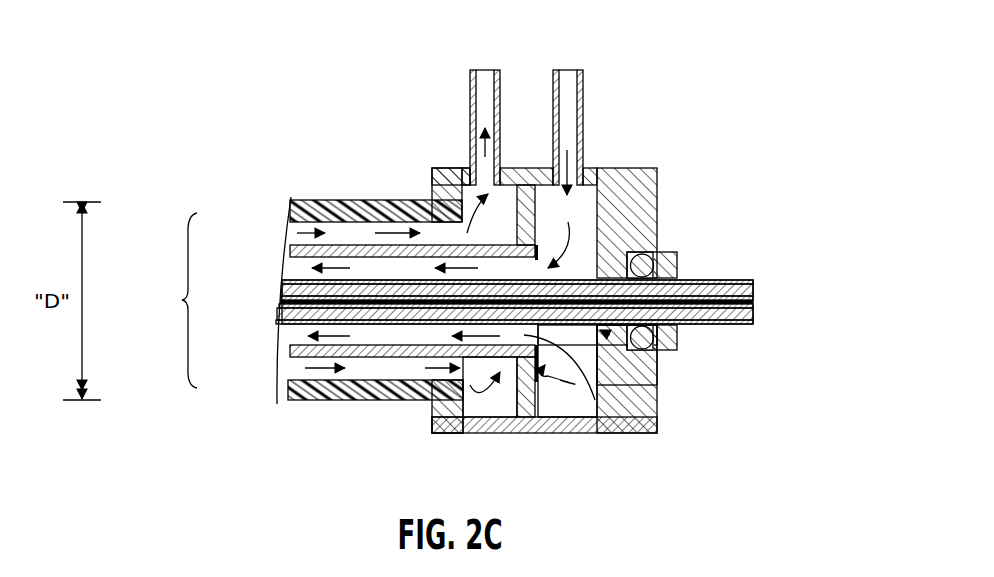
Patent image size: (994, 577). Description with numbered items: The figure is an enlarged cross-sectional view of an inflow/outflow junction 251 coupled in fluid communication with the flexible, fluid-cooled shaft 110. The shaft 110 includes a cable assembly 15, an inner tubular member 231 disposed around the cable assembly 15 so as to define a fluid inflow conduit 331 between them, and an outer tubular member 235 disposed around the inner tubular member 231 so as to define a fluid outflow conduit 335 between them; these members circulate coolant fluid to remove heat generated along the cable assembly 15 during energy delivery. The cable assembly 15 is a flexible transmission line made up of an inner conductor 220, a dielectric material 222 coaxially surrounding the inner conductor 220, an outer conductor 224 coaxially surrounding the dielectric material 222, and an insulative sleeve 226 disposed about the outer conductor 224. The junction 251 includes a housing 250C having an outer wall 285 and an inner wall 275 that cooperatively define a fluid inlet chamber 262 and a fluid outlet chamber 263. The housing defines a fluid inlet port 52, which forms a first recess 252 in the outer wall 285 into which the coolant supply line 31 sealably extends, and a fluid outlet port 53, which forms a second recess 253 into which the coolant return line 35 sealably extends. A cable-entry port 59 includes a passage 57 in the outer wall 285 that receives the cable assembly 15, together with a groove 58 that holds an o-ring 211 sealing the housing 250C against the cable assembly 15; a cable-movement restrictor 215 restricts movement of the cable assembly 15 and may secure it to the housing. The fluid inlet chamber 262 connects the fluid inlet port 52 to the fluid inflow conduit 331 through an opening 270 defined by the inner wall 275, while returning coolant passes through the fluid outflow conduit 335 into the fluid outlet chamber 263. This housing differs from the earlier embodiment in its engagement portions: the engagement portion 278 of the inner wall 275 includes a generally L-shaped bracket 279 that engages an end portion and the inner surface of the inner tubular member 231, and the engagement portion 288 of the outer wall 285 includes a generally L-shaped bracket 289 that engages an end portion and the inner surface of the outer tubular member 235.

The cable assembly 15 is at (172, 300).
The coolant supply line 31 is at (583, 100).
The coolant return line 35 is at (470, 100).
The fluid inlet port 52 is at (586, 152).
The fluid outlet port 53 is at (466, 152).
The passage 57 is at (658, 385).
The groove 58 is at (650, 250).
The cable-entry port 59 is at (640, 248).
The flexible, fluid-cooled shaft 110 is at (302, 160).
The o-ring 211 is at (658, 368).
The cable-movement restrictor 215 is at (677, 340).
The inner conductor 220 is at (283, 302).
The dielectric material 222 is at (287, 296).
The outer conductor 224 is at (289, 288).
The sleeve 226 is at (290, 281).
The inner tubular member 231 is at (282, 395).
The outer tubular member 235 is at (291, 210).
The housing 250C is at (657, 180).
The inflow/outflow junction 251 is at (729, 66).
The first recess 252 is at (593, 174).
The second recess 253 is at (461, 166).
The fluid inlet chamber 262 is at (560, 408).
The fluid outlet chamber 263 is at (493, 405).
The opening 270 is at (657, 418).
The inner wall 275 is at (513, 218).
The engagement portion 278 is at (528, 412).
The L-shaped bracket 279 is at (630, 435).
The outer wall 285 is at (452, 425).
The engagement portion 288 is at (432, 430).
The L-shaped bracket 289 is at (432, 187).
The fluid inflow conduit 331 is at (407, 355).
The fluid outflow conduit 335 is at (360, 233).